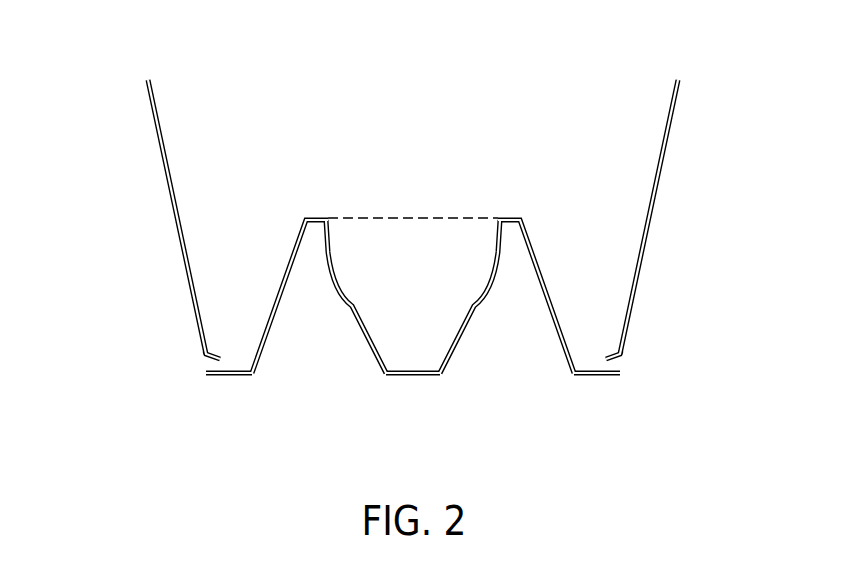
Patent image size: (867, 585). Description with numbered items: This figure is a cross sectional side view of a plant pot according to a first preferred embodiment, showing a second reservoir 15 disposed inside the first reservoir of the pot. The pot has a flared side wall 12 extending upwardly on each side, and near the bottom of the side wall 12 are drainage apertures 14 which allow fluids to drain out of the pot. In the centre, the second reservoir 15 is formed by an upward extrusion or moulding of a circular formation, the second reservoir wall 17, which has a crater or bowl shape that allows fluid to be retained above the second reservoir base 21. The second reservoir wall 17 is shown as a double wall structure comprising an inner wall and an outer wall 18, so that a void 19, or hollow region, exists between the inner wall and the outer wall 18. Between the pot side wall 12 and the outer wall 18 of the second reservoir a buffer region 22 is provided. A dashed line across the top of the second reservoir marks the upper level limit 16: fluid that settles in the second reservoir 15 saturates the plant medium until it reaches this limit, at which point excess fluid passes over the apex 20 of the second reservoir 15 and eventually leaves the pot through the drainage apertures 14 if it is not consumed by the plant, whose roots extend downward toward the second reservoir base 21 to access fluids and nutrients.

The side wall 12 is at (164, 160).
The drainage apertures 14 is at (190, 361).
The second reservoir 15 is at (430, 320).
The upper level limit 16 is at (414, 193).
The second reservoir wall 17 is at (344, 290).
The outer wall 18 is at (278, 274).
The void 19 is at (308, 340).
The apex 20 is at (513, 218).
The second reservoir base 21 is at (414, 378).
The buffer region 22 is at (593, 244).